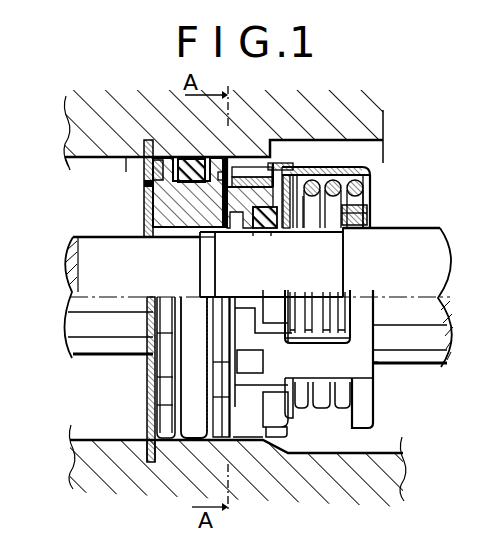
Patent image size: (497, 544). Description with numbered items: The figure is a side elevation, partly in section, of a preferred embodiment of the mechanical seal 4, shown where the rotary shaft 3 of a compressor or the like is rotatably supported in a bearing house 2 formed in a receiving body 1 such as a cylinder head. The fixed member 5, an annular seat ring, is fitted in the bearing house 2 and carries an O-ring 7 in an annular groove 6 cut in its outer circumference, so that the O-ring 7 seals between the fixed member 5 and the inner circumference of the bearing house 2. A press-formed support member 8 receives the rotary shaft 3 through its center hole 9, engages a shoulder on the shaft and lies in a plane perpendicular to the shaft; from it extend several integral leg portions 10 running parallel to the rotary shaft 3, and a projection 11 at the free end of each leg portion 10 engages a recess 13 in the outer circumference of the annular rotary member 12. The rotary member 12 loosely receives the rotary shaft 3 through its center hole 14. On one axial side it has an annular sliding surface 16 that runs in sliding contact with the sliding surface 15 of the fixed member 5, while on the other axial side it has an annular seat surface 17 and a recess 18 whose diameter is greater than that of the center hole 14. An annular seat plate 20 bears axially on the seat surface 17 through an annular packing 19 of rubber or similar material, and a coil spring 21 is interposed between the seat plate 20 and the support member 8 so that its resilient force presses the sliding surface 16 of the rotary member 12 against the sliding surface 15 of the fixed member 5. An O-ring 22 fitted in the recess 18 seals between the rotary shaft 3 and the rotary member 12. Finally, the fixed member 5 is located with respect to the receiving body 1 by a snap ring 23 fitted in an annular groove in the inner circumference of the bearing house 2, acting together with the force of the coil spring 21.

The receiving body 1 is at (106, 135).
The bearing house 2 is at (127, 160).
The rotary shaft 3 is at (126, 362).
The mechanical seal 4 is at (386, 392).
The fixed member 5 is at (146, 140).
The annular groove 6 is at (160, 160).
The O-ring 7 is at (197, 158).
The support member 8 is at (373, 198).
The center hole 9 is at (344, 243).
The leg portions 10 is at (350, 167).
The projection 11 is at (248, 164).
The rotary member 12 is at (252, 233).
The recess 13 is at (273, 157).
The center hole 14 is at (248, 232).
The sliding surface 15 is at (216, 196).
The sliding surface 16 is at (204, 237).
The seat surface 17 is at (285, 175).
The recess 18 is at (277, 227).
The annular packing 19 is at (292, 172).
The seat plate 20 is at (304, 180).
The coil spring 21 is at (370, 178).
The O-ring 22 is at (271, 233).
The snap ring 23 is at (138, 462).